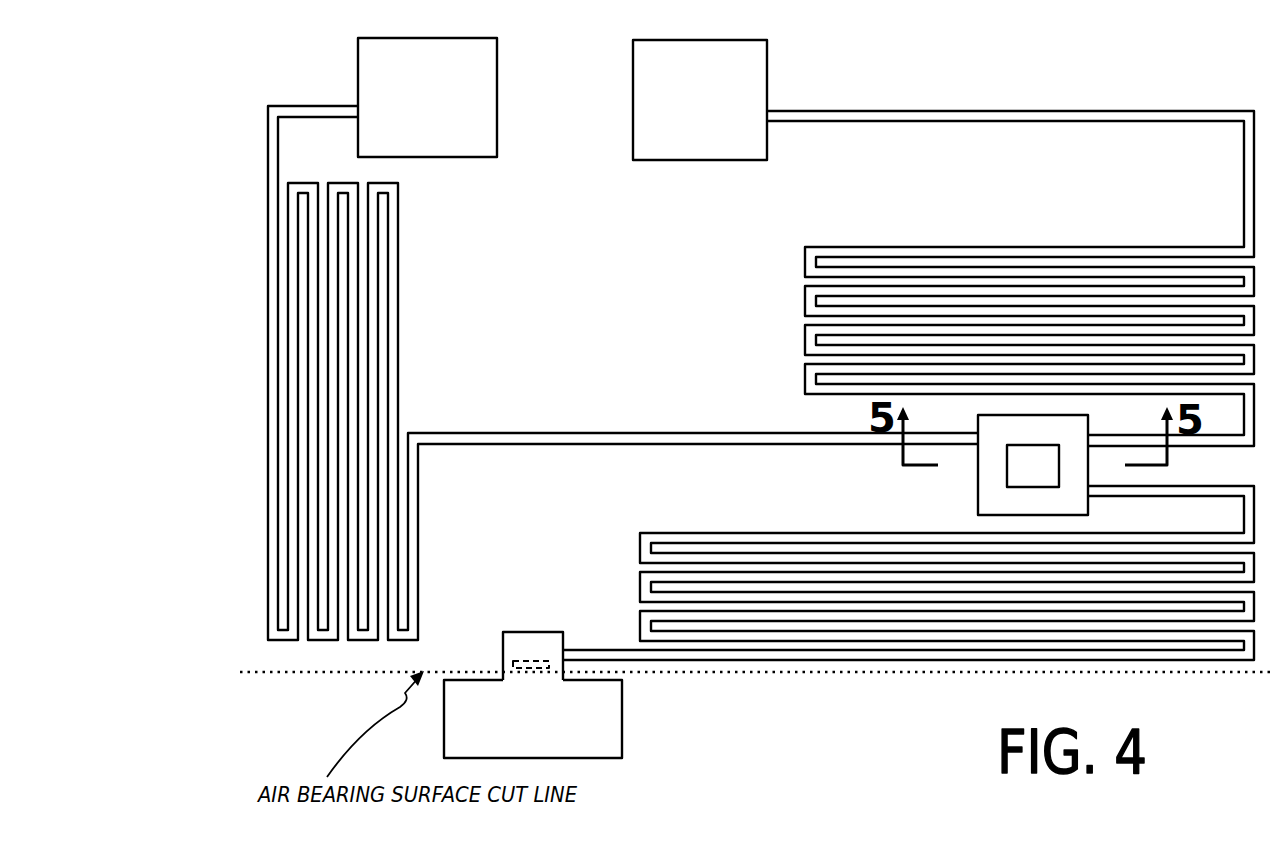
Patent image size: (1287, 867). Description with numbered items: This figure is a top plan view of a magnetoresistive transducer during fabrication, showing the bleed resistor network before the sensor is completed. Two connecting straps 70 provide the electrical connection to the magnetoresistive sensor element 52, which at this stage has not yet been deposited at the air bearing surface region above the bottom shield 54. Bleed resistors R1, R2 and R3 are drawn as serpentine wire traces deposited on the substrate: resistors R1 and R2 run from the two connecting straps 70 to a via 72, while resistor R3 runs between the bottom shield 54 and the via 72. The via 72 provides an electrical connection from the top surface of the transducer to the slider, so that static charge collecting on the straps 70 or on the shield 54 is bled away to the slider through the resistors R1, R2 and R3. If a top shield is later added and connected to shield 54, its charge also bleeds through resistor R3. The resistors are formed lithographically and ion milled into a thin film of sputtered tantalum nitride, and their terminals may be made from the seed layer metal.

The connecting straps 70 is at (497, 68).
The bleed resistor R1 is at (937, 247).
The bleed resistor R2 is at (398, 260).
The bleed resistor R3 is at (752, 532).
The via 72 is at (998, 475).
The magnetoresistive sensor element 52 is at (525, 646).
The bottom shield 54 is at (602, 759).